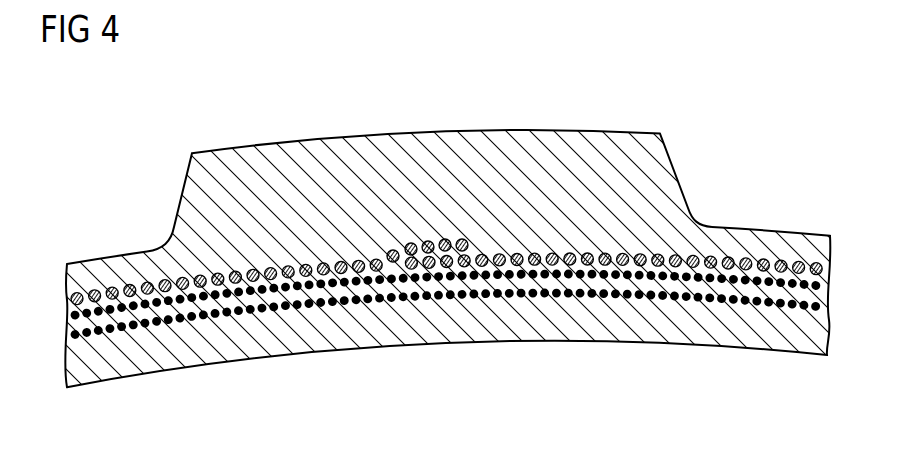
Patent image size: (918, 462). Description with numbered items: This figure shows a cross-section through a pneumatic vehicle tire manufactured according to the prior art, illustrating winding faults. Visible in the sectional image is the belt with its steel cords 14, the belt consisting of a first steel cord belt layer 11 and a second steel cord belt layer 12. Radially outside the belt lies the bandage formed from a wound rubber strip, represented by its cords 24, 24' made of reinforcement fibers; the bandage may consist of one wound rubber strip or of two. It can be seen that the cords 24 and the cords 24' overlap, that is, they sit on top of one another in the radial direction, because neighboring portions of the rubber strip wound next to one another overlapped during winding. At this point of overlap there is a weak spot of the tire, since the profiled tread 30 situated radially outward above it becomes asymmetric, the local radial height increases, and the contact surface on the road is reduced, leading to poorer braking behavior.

The first steel cord belt layer 11 is at (620, 304).
The second steel cord belt layer 12 is at (545, 282).
The steel cords 14 is at (458, 277).
The cords 24 is at (446, 184).
The cords 24' is at (427, 162).
The tread 30 is at (388, 168).